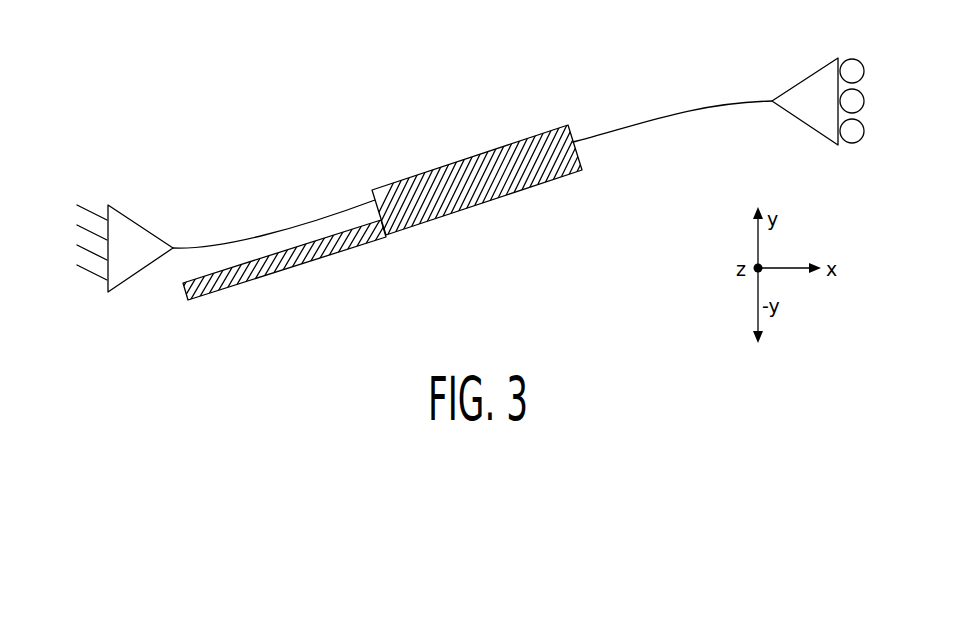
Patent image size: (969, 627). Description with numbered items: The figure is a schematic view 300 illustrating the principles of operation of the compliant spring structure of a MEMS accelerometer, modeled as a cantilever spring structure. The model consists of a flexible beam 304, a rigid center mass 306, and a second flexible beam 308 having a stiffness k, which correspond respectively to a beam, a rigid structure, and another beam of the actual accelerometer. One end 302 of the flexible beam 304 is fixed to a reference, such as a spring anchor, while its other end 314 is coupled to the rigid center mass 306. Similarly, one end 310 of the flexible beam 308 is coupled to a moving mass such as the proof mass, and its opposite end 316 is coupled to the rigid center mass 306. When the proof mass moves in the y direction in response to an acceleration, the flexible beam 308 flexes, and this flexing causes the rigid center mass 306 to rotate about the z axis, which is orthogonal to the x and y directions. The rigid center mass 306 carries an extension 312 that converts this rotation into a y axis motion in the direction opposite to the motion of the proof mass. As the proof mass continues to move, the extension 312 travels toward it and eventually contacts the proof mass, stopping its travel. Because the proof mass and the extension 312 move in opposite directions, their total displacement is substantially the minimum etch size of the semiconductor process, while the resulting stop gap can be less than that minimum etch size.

The schematic view 300 is at (286, 90).
The end of the beam 302 is at (145, 223).
The flexible beam 304 is at (247, 240).
The rigid center mass 306 is at (450, 164).
The flexible beam 308 is at (710, 103).
The end of the beam 310 is at (805, 79).
The extension 312 is at (307, 263).
The end of the beam 314 is at (337, 192).
The end of the beam 316 is at (672, 107).